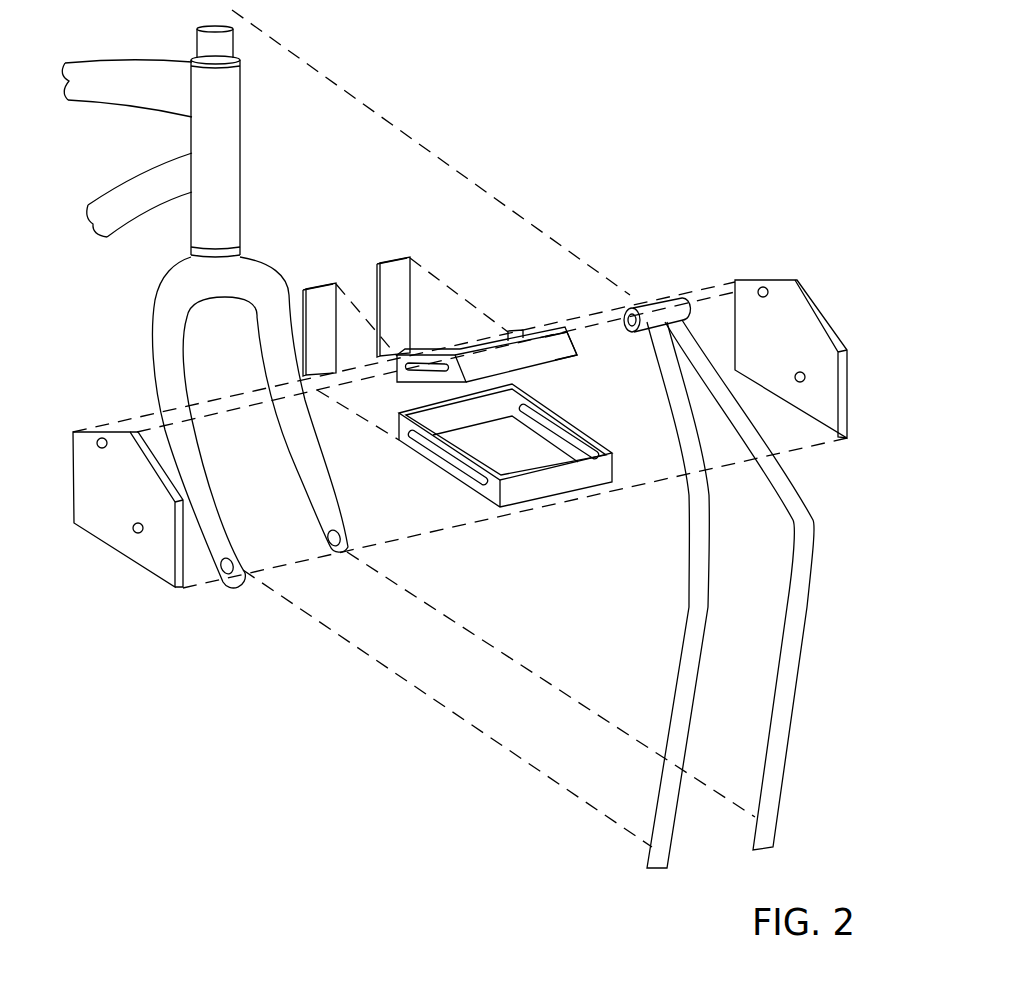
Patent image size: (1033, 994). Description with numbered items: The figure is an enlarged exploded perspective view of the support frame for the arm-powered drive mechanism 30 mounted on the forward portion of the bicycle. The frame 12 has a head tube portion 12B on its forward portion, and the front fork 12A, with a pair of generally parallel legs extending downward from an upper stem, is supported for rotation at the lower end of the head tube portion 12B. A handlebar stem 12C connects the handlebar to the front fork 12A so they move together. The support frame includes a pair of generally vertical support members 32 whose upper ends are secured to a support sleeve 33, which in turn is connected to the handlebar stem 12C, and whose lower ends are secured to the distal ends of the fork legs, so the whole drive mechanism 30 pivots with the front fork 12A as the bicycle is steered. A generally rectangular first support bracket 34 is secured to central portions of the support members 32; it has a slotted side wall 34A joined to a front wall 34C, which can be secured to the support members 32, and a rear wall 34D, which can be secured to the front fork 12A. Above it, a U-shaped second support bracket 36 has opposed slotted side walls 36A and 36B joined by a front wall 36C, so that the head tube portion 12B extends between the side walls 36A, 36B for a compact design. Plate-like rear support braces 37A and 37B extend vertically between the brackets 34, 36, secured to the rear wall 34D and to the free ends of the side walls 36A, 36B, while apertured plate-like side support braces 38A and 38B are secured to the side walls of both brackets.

The frame 12 is at (86, 72).
The front fork 12A is at (165, 372).
The head tube portion 12B is at (200, 131).
The handlebar stem 12C is at (196, 34).
The arm-powered drive mechanism 30 is at (760, 68).
The vertical support members 32 is at (710, 568).
The support sleeve 33 is at (655, 309).
The first support bracket 34 is at (511, 460).
The side wall 34A is at (420, 456).
The front wall 34C is at (593, 480).
The rear wall 34D is at (450, 416).
The second support bracket 36 is at (498, 355).
The side wall 36A is at (428, 378).
The side wall 36B is at (518, 333).
The front wall 36C is at (560, 356).
The first rear support brace 37A is at (322, 290).
The second rear support brace 37B is at (397, 268).
The side support brace 38A is at (85, 486).
The side support brace 38B is at (745, 285).